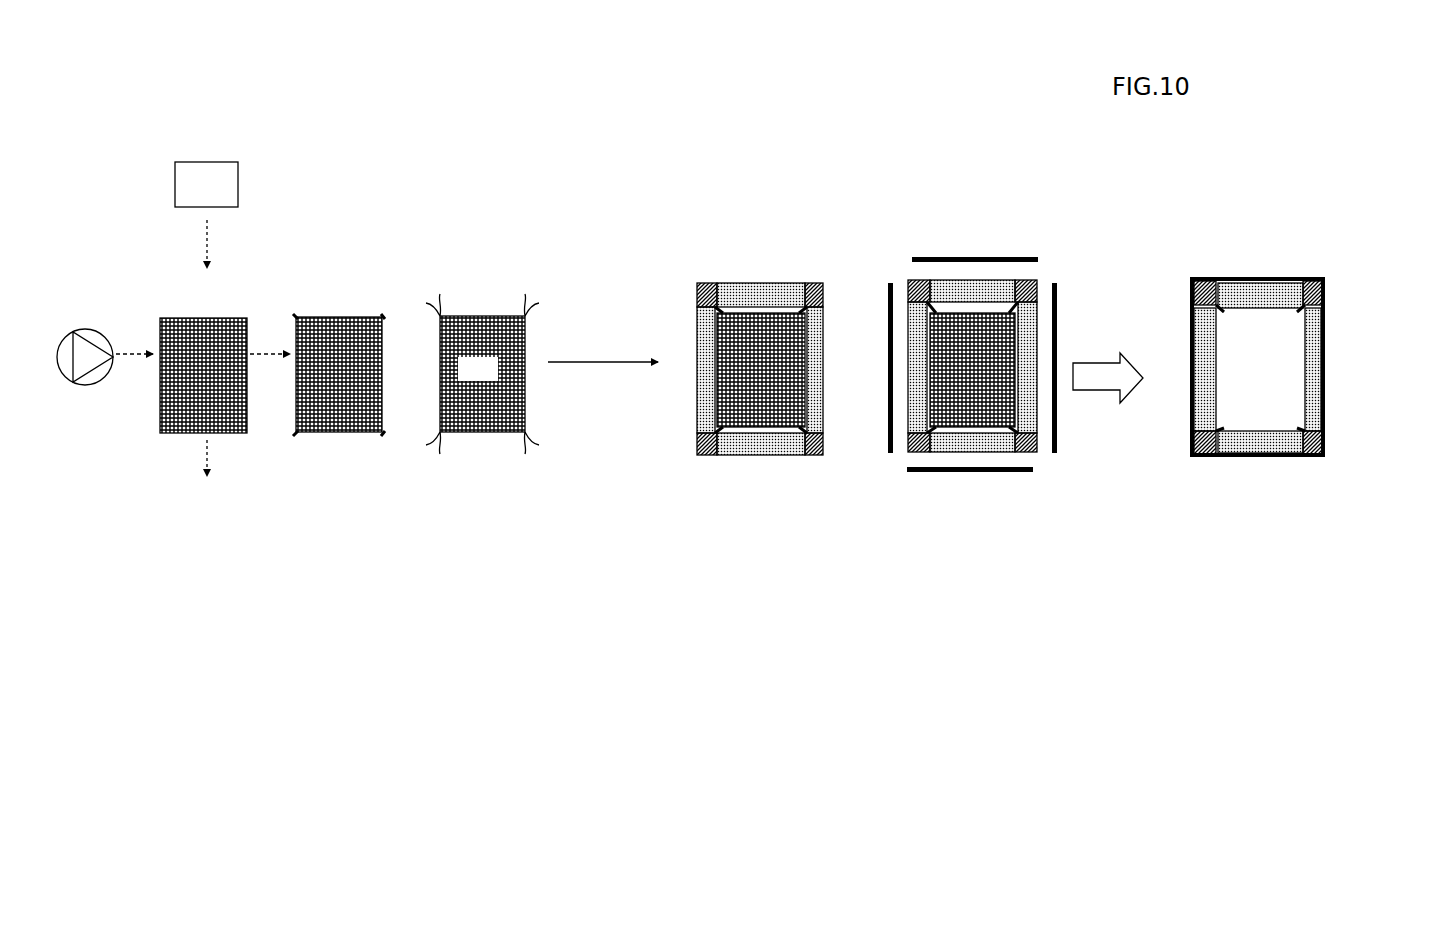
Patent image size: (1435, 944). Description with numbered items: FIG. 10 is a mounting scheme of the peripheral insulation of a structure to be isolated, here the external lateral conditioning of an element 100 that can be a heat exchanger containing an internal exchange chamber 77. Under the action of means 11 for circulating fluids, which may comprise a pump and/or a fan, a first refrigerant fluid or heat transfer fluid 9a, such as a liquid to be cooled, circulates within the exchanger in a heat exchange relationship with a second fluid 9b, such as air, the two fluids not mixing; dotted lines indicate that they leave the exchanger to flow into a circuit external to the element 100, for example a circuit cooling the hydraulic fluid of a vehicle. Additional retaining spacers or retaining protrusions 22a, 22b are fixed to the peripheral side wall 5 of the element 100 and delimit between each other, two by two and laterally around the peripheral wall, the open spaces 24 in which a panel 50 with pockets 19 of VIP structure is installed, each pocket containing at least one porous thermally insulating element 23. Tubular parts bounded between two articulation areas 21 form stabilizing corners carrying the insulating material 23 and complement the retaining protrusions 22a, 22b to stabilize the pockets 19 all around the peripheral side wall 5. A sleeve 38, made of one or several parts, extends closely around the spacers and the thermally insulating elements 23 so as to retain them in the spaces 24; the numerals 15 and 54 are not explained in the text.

The means for circulating fluid(s) 11 is at (238, 172).
The first refrigerant fluid or heat transfer fluid 9a is at (231, 244).
The second fluid 9b is at (134, 332).
The internal exchange chamber 77 is at (176, 362).
The peripheral side wall 5 is at (167, 434).
The element 100 is at (244, 434).
The retaining spacers or retaining protrusions 22a is at (300, 312).
The retaining spacers or retaining protrusions 22b is at (440, 303).
The open spaces 24 is at (492, 309).
The core 15 is at (753, 312).
The pockets 19 is at (787, 288).
The porous thermally insulating element 23 is at (813, 354).
The articulation areas 21 is at (714, 284).
The corner block 54 is at (912, 290).
The panel 50 is at (700, 456).
The sleeve 38 is at (987, 250).